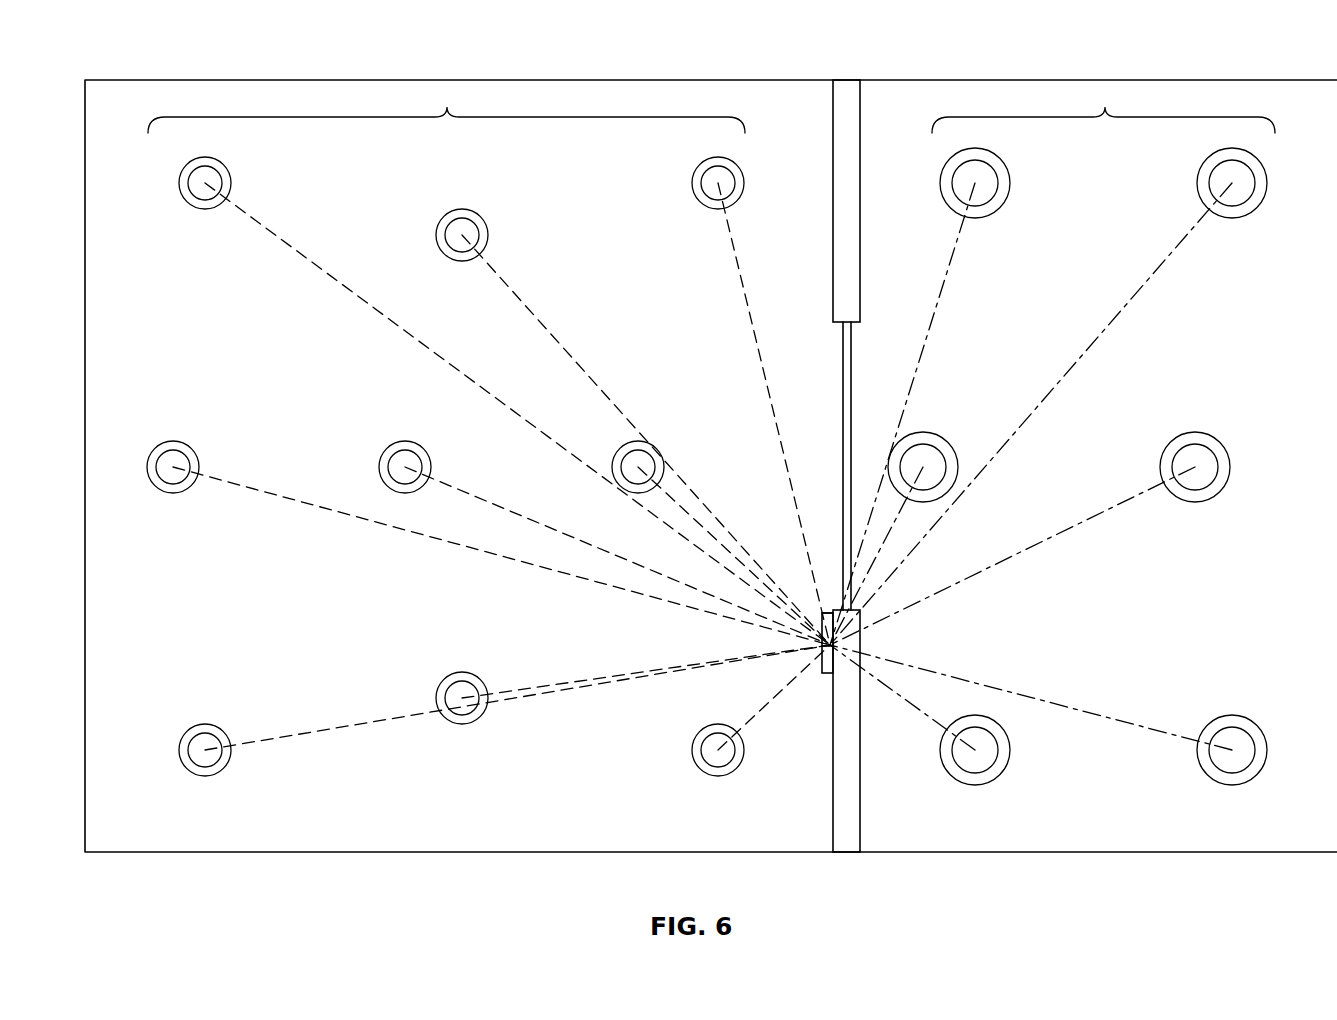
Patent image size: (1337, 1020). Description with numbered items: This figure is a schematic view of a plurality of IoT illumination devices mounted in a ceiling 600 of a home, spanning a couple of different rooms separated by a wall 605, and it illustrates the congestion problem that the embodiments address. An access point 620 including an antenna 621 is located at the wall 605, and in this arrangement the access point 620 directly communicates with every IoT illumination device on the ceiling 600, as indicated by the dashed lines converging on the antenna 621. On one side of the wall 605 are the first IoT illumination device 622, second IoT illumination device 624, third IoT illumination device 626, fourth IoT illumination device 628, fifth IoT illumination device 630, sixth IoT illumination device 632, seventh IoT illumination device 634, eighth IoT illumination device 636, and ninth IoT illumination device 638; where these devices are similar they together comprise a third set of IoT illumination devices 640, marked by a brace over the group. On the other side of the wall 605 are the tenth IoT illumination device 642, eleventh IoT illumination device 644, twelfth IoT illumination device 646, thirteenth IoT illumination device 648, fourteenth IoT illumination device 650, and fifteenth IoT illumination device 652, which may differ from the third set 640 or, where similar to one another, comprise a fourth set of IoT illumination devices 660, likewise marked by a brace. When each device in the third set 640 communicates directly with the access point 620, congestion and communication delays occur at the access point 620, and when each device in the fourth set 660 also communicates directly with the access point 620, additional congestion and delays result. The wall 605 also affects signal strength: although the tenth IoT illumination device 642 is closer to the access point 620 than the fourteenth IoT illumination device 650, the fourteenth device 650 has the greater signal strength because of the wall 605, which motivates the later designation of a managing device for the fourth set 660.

The ceiling 600 is at (410, 814).
The wall 605 is at (845, 832).
The access point 620 is at (826, 676).
The antenna 621 is at (826, 613).
The first IoT illumination device 622 is at (692, 750).
The second IoT illumination device 624 is at (205, 723).
The third IoT illumination device 626 is at (437, 698).
The fourth IoT illumination device 628 is at (173, 441).
The fifth IoT illumination device 630 is at (380, 467).
The sixth IoT illumination device 632 is at (232, 183).
The seventh IoT illumination device 634 is at (462, 209).
The eighth IoT illumination device 636 is at (625, 447).
The ninth IoT illumination device 638 is at (692, 183).
The third set of IoT illumination devices 640 is at (447, 107).
The tenth IoT illumination device 642 is at (1010, 750).
The eleventh IoT illumination device 644 is at (1232, 715).
The twelfth IoT illumination device 646 is at (1195, 433).
The thirteenth IoT illumination device 648 is at (1197, 183).
The fourteenth IoT illumination device 650 is at (928, 433).
The fifteenth IoT illumination device 652 is at (1010, 183).
The fourth set of IoT illumination devices 660 is at (1105, 107).